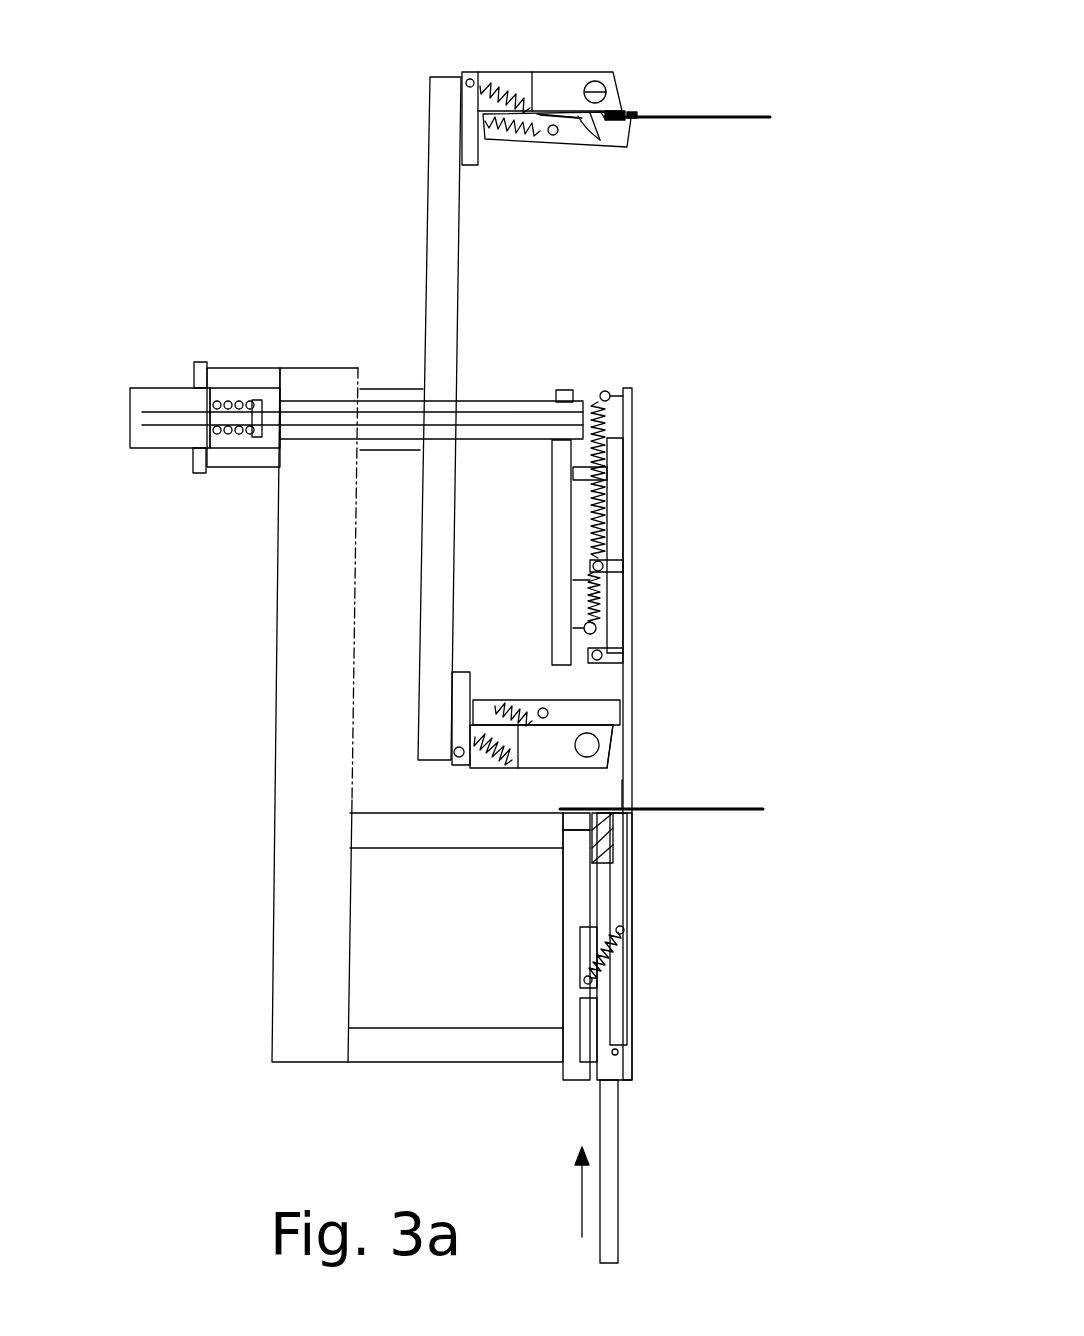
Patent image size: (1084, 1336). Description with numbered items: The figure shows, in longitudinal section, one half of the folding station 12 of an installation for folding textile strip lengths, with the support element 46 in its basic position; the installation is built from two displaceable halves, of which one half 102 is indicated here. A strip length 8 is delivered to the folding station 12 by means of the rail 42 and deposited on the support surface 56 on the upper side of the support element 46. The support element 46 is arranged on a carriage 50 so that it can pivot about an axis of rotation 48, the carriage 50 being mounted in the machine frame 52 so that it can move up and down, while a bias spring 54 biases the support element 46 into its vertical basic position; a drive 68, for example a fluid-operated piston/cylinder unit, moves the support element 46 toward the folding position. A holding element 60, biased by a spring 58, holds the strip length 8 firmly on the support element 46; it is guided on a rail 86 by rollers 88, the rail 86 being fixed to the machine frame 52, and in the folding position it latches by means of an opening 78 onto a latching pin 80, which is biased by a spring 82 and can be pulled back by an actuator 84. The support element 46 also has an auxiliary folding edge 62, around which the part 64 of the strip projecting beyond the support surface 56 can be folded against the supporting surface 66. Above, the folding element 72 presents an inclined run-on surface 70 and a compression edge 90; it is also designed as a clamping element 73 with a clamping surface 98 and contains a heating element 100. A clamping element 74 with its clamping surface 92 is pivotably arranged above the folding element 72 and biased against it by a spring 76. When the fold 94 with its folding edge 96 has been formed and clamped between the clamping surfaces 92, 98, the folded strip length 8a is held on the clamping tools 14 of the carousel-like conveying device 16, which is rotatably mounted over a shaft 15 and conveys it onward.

The half of the installation 102 is at (335, 120).
The clamping tool 14 is at (552, 42).
The heating element 100 is at (595, 80).
The clamping element 73 is at (606, 94).
The clamping surface 92 is at (618, 112).
The folded strip length 8a is at (705, 122).
The clamping surface 98 is at (578, 136).
The clamping element 74 is at (598, 134).
The fold 94 is at (632, 122).
The folding edge 96 is at (602, 122).
The carousel-like conveying device 16 is at (498, 302).
The actuator 84 is at (155, 400).
The spring 82 is at (231, 400).
The shaft 15 is at (390, 388).
The latching pin 80 is at (637, 420).
The spring 58 is at (610, 505).
The rail 86 is at (615, 530).
The opening 78 is at (632, 530).
The rollers 88 is at (596, 566).
The spring 76 is at (503, 692).
The machine frame 52 is at (290, 690).
The compression edge 90 is at (602, 740).
The inclined run-on surface 70 is at (612, 738).
The strip length 8 is at (736, 806).
The folding station 12 is at (828, 770).
The folding element 72 is at (542, 760).
The part of the strip 64 is at (588, 810).
The holding element 60 is at (625, 788).
The rail 42 is at (568, 828).
The auxiliary folding edge 62 is at (577, 830).
The support surface 56 is at (602, 852).
The supporting surface 66 is at (605, 866).
The support element 46 is at (620, 890).
The bias spring 54 is at (620, 962).
The carriage 50 is at (588, 1010).
The axis of rotation 48 is at (620, 1046).
The drive 68 is at (640, 1202).